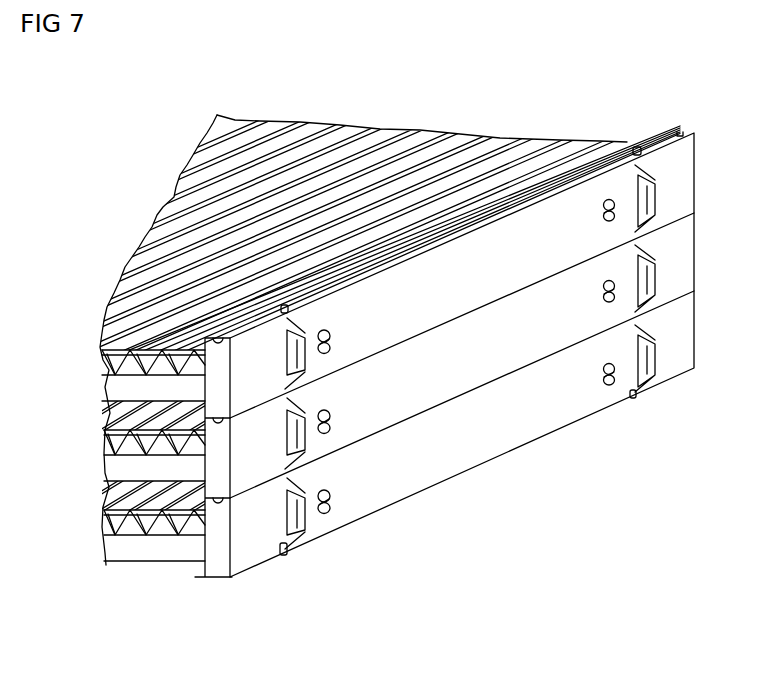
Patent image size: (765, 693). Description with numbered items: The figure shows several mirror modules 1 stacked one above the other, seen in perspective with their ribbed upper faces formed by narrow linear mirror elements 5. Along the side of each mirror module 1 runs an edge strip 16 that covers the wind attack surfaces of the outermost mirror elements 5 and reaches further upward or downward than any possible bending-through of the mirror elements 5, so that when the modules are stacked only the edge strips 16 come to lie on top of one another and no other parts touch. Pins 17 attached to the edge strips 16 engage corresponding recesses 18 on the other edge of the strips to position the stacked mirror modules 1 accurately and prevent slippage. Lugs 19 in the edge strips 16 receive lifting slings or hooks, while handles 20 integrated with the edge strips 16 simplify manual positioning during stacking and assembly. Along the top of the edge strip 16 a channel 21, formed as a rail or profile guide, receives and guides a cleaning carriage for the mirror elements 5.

The mirror module 1 is at (462, 104).
The mirror elements 5 is at (320, 140).
The edge strips 16 is at (423, 458).
The pins 17 is at (636, 147).
The recesses 18 is at (285, 556).
The lugs 19 is at (328, 515).
The handles 20 is at (652, 372).
The channel 21 is at (685, 132).